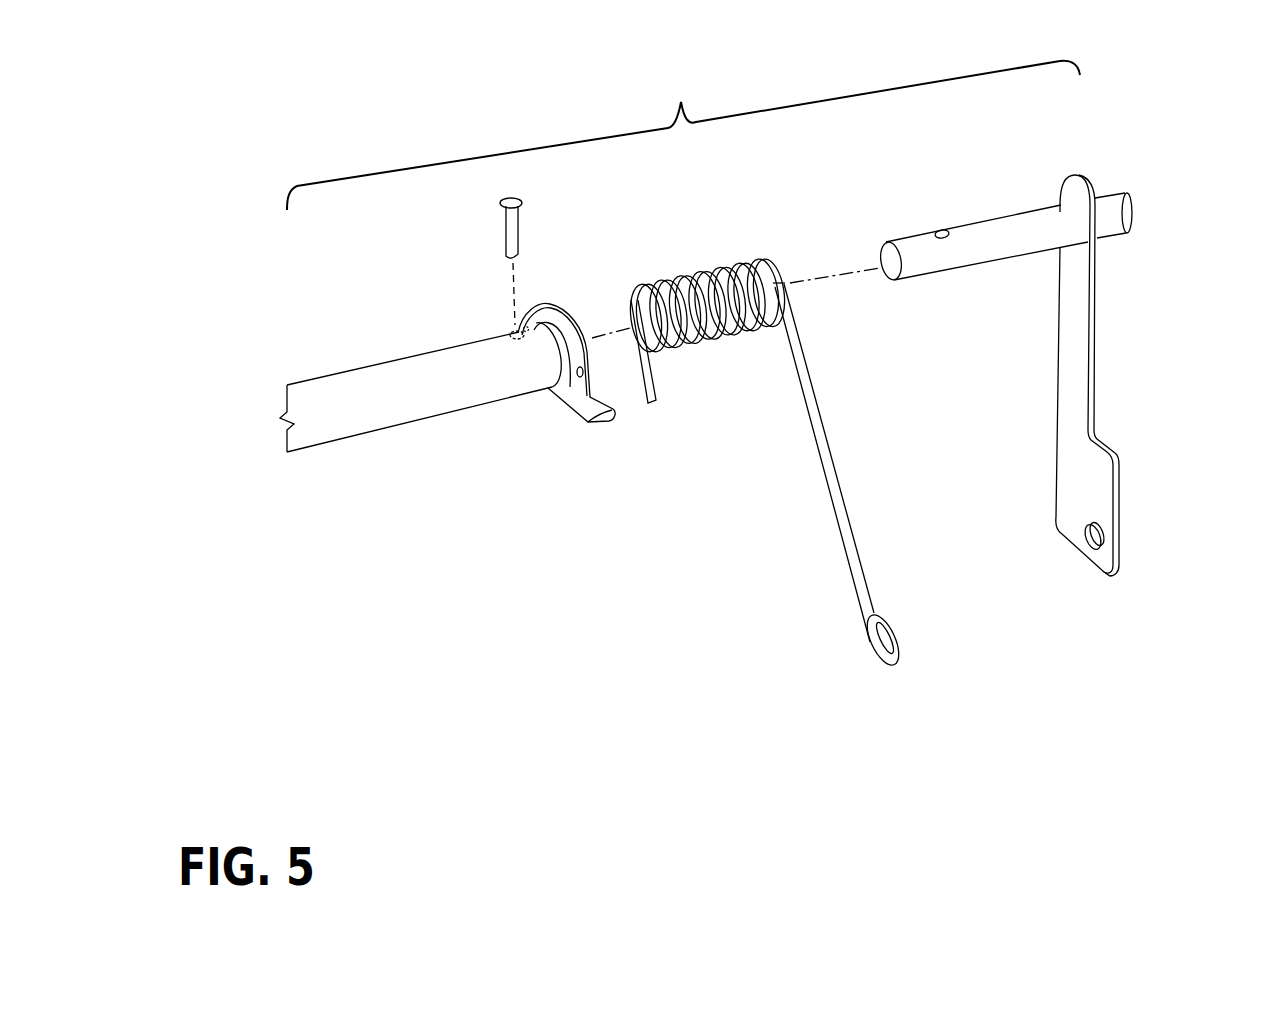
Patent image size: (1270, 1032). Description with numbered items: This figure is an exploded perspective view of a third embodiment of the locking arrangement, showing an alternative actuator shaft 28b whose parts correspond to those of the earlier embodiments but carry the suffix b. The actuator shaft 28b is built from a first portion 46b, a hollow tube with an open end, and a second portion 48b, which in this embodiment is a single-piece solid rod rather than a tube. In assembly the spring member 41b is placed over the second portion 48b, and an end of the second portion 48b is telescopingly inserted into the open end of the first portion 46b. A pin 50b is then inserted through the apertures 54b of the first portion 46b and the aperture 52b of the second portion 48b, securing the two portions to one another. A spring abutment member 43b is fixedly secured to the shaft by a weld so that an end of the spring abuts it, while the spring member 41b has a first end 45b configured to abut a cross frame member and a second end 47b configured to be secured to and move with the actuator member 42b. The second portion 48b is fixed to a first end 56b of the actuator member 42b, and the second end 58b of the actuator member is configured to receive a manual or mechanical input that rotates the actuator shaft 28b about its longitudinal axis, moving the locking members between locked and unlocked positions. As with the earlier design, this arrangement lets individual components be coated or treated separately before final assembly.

The actuator shaft 28b is at (683, 135).
The spring member 41b is at (712, 270).
The actuator member 42b is at (1141, 375).
The spring abutment member 43b is at (553, 311).
The first end of the spring member 45b is at (648, 378).
The first portion of the actuator shaft 46b is at (357, 367).
The second end of the spring member 47b is at (837, 505).
The second portion of the actuator shaft 48b is at (980, 228).
The pin 50b is at (510, 233).
The aperture of the second portion 52b is at (940, 234).
The apertures of the first portion 54b is at (511, 331).
The first end of the actuator member 56b is at (1083, 253).
The second end of the actuator member 58b is at (1115, 500).